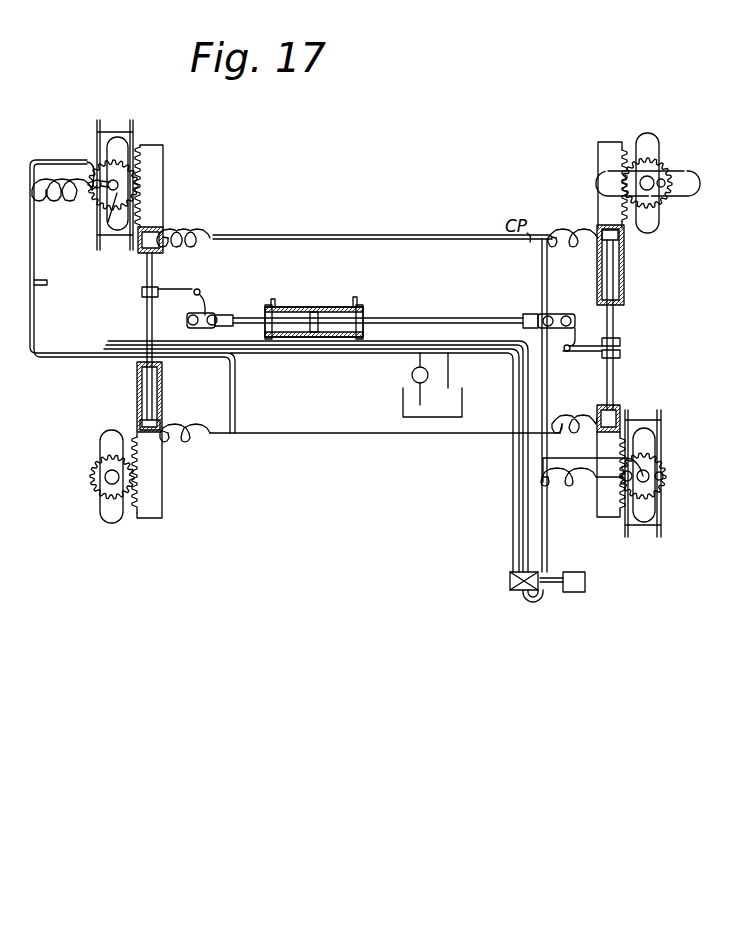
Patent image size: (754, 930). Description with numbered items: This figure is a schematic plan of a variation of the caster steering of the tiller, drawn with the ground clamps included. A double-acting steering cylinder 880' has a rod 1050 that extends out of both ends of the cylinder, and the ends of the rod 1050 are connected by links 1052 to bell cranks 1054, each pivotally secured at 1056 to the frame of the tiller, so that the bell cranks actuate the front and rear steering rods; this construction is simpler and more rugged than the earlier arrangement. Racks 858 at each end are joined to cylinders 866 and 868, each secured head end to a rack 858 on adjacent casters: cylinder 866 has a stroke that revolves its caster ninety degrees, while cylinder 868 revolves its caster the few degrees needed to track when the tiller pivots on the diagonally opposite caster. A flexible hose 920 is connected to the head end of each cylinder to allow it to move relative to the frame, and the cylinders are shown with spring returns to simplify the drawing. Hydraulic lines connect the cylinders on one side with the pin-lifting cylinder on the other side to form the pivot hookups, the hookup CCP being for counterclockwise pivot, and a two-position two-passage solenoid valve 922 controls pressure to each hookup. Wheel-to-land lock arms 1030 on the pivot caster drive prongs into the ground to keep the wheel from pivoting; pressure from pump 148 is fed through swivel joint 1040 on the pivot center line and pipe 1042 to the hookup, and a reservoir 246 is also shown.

The wheel-to-land lock arm 1030 is at (132, 121).
The swivel joint 1040 is at (97, 197).
The pipe 1042 is at (72, 163).
The rack 858 is at (163, 150).
The cylinder 868 is at (166, 238).
The flexible hose 920 is at (210, 246).
The cylinder 866 is at (624, 273).
The bell crank 1054 is at (156, 300).
The pivot 1056 is at (202, 300).
The link 1052 is at (207, 323).
The rod 1050 is at (395, 320).
The steering cylinder 880' is at (314, 310).
The pump 148 is at (412, 376).
The reservoir 246 is at (403, 404).
The two-position two-passage solenoid valve 922 is at (506, 591).
The pivot hookup for counterclockwise pivot CCP is at (132, 296).